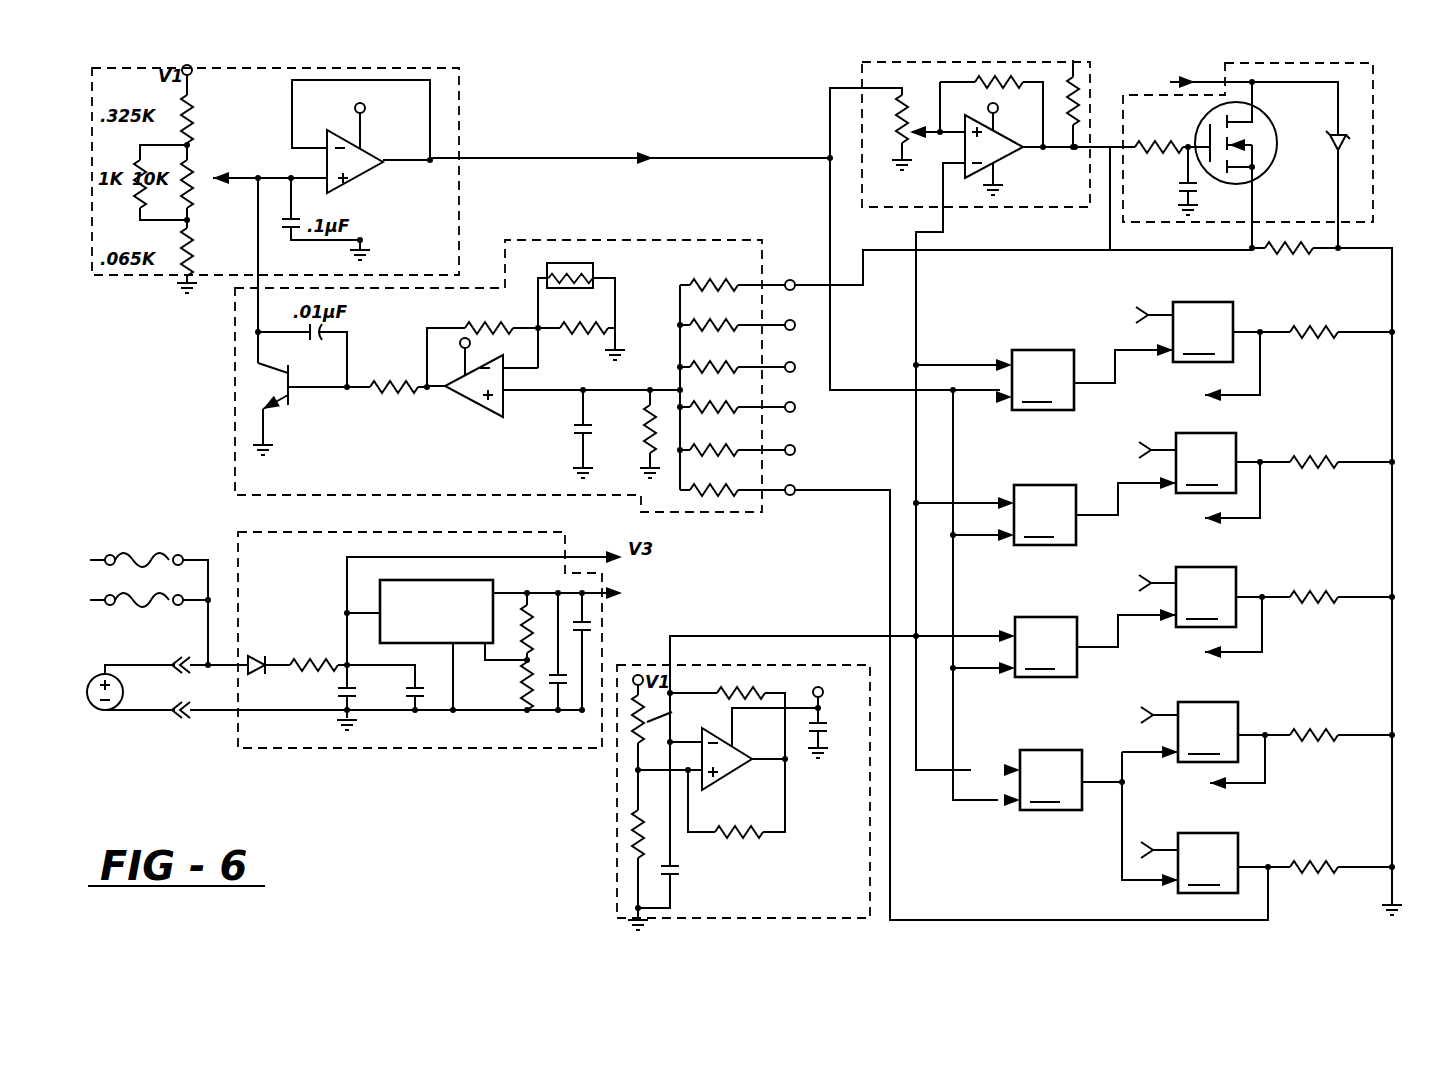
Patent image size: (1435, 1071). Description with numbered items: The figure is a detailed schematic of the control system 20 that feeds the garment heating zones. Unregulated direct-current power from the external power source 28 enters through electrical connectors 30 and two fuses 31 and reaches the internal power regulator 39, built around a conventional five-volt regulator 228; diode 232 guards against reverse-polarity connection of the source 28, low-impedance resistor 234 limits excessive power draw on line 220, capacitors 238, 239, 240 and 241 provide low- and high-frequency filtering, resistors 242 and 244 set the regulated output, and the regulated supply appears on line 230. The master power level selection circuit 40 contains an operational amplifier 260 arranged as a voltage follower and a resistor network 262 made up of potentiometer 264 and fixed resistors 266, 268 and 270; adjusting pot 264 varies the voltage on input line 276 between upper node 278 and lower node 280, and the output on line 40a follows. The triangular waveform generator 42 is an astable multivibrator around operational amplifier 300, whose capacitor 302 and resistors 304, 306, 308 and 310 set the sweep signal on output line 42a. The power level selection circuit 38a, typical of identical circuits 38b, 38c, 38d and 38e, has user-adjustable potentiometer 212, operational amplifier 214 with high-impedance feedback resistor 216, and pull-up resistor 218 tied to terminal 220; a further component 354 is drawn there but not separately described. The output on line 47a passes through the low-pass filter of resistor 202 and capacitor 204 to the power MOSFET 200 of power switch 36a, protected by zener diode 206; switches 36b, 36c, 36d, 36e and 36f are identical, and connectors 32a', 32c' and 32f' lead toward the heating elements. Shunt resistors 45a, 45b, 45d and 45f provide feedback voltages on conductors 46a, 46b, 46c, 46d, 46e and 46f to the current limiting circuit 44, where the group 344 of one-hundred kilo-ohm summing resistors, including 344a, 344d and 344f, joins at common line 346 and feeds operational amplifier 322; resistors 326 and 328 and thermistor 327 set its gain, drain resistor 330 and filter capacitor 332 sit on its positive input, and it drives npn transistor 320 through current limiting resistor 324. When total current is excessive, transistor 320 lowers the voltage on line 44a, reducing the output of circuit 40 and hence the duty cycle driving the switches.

The control system 20 is at (480, 812).
The external power source 28 is at (101, 710).
The electrical connectors 30 is at (178, 655).
The fuses 31 is at (143, 546).
The power switch 36a is at (1385, 125).
The power switch 36b is at (1265, 332).
The power switch 36c is at (1256, 448).
The power switch 36d is at (1267, 597).
The power switch 36e is at (1268, 732).
The power switch 36f is at (1268, 846).
The power level selection circuit 38a is at (840, 66).
The power level selection circuit 38b is at (1044, 377).
The power level selection circuit 38c is at (1046, 511).
The power level selection circuit 38d is at (1063, 643).
The power level selection circuit 38e is at (1099, 816).
The internal power regulator 39 is at (384, 752).
The master power level selection circuit 40 is at (475, 118).
The output line 40a is at (728, 155).
The triangular waveform generator 42 is at (585, 810).
The output line 42a is at (916, 325).
The current limiting circuit 44 is at (220, 432).
The control line 44a is at (248, 285).
The shunt resistor 45a is at (1304, 256).
The shunt resistor 45b is at (1310, 336).
The shunt resistor 45d is at (1305, 602).
The shunt resistor 45f is at (1307, 866).
The conductor 46a is at (800, 268).
The conductor 46b is at (812, 318).
The conductor 46c is at (1268, 510).
The conductor 46d is at (812, 400).
The conductor 46e is at (795, 450).
The conductor 46f is at (794, 495).
The output line 47a is at (1110, 218).
The power MOSFET 200 is at (1258, 115).
The resistor 202 is at (1166, 140).
The capacitor 204 is at (1200, 193).
The zener diode 206 is at (1330, 138).
The potentiometer 212 is at (922, 158).
The operational amplifier 214 is at (985, 100).
The feedback resistor 216 is at (970, 80).
The pull-up resistor 218 is at (1074, 107).
The terminal 220 is at (1071, 82).
The voltage regulator 228 is at (493, 580).
The supply line 230 is at (616, 596).
The diode 232 is at (256, 649).
The low impedance resistor 234 is at (284, 662).
The capacitor 238 is at (370, 705).
The capacitor 239 is at (552, 704).
The capacitor 240 is at (424, 700).
The capacitor 241 is at (592, 620).
The resistor 242 is at (527, 637).
The resistor 244 is at (520, 689).
The operational amplifier 260 is at (371, 141).
The resistor network 262 is at (158, 290).
The potentiometer 264 is at (200, 157).
The fixed resistor 266 is at (200, 100).
The fixed resistor 268 is at (124, 163).
The fixed resistor 270 is at (189, 254).
The input line 276 is at (240, 178).
The upper node 278 is at (200, 129).
The lower node 280 is at (189, 220).
The operational amplifier 300 is at (758, 744).
The capacitor 302 is at (678, 876).
The resistor 304 is at (635, 735).
The resistor 306 is at (625, 855).
The resistor 308 is at (763, 690).
The resistor 310 is at (748, 838).
The npn bipolar junction transistor 320 is at (283, 395).
The operational amplifier 322 is at (450, 410).
The current limiting resistor 324 is at (400, 360).
The resistor 326 is at (478, 328).
The thermistor 327 is at (547, 263).
The resistor 328 is at (555, 335).
The pull-down resistor 330 is at (646, 432).
The filter capacitor 332 is at (570, 440).
The summing resistors 344 is at (705, 367).
The summing resistor 344a is at (718, 292).
The summing resistor 344d is at (718, 416).
The summing resistor 344f is at (718, 498).
The common line 346 is at (678, 364).
The potentiometer 354 is at (910, 130).
The electrical connector 32a' is at (1211, 71).
The electrical connector 32c' is at (1146, 431).
The electrical connector 32f' is at (1172, 828).